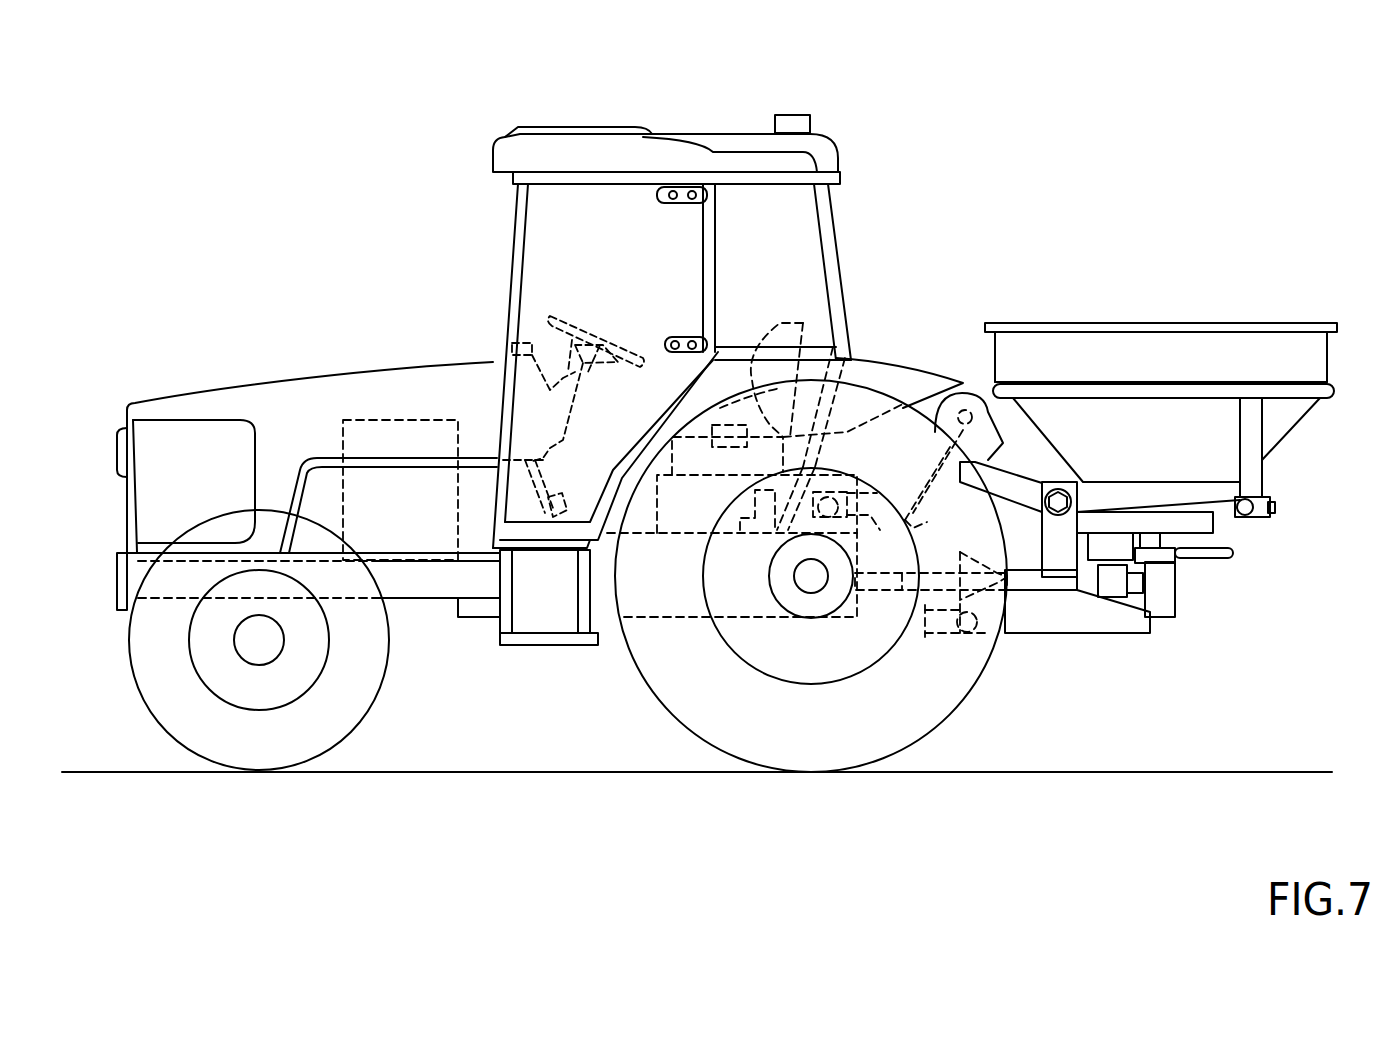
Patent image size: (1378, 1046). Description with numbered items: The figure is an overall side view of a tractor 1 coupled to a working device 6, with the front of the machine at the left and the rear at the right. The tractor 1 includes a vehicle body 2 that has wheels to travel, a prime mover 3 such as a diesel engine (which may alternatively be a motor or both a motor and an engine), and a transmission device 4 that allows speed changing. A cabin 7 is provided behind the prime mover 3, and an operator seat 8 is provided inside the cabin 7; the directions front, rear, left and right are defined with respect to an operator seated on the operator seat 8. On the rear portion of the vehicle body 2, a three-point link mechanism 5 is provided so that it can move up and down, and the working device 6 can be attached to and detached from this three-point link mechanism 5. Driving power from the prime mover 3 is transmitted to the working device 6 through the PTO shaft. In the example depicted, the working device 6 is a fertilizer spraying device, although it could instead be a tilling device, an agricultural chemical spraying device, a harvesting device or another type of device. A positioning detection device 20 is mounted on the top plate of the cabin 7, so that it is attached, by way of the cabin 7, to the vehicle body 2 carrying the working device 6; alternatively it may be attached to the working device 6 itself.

The tractor 1 is at (782, 78).
The vehicle body 2 is at (416, 605).
The prime mover 3 is at (458, 495).
The transmission device 4 is at (607, 595).
The three-point link mechanism 5 is at (920, 490).
The working device 6 is at (1213, 313).
The cabin 7 is at (833, 255).
The operator seat 8 is at (777, 328).
The positioning detection device 20 is at (813, 110).